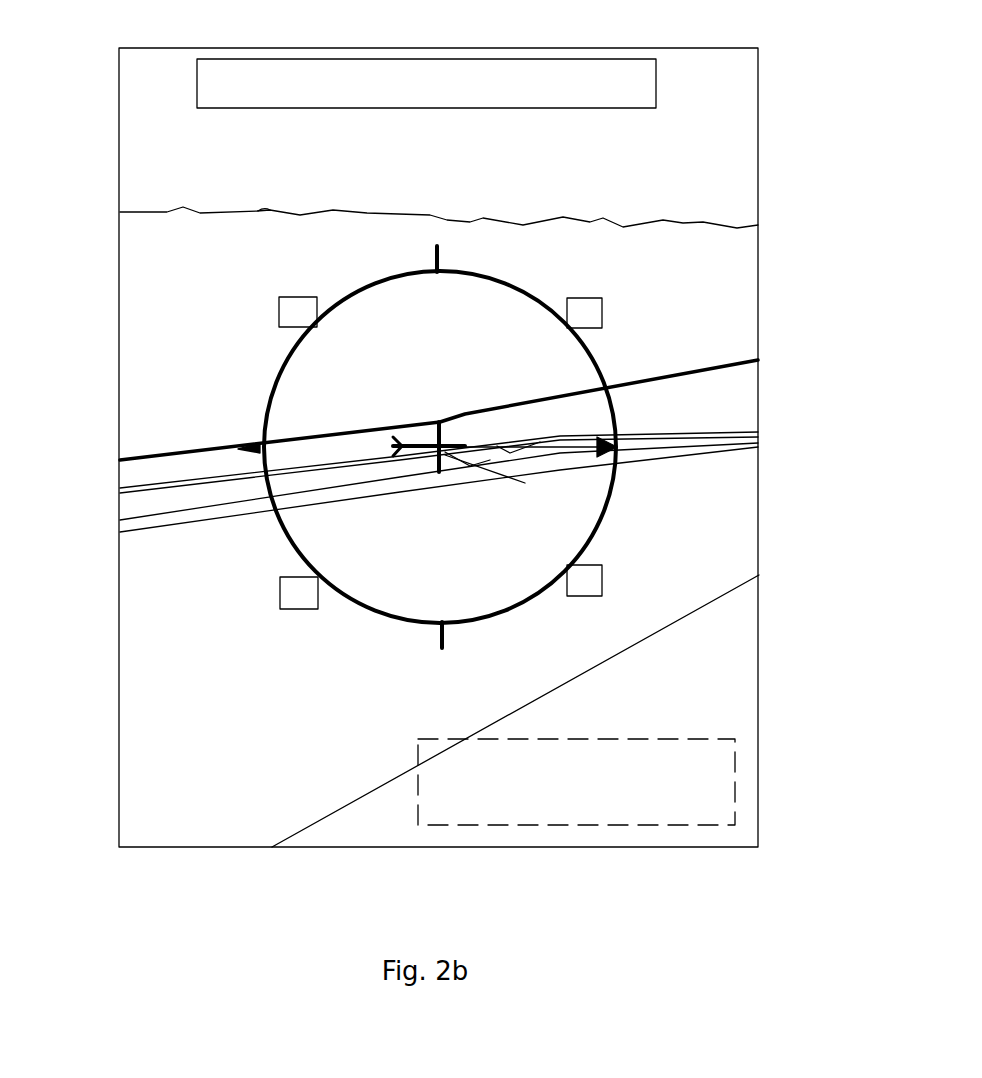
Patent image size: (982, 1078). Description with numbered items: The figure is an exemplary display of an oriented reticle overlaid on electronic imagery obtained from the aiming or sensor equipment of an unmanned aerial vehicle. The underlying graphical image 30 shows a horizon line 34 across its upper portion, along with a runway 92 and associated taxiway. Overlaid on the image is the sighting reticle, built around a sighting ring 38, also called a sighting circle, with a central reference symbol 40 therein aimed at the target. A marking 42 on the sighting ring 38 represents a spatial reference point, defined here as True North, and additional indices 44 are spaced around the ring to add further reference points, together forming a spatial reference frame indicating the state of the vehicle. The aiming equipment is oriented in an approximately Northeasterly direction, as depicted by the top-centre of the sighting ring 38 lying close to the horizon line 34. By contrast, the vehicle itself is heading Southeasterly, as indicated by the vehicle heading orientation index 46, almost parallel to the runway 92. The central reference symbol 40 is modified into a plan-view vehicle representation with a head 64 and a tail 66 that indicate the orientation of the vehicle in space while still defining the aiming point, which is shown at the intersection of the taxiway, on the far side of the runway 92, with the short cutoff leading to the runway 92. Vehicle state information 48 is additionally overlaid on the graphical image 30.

The graphical image 30 is at (760, 105).
The horizon line 34 is at (167, 212).
The sighting ring 38 is at (396, 502).
The central reference symbol 40 is at (626, 483).
The marking 42 is at (68, 327).
The additional indices 44 is at (600, 595).
The vehicle heading orientation index 46 is at (493, 431).
The vehicle state information 48 is at (519, 59).
The head 64 is at (488, 370).
The tail 66 is at (330, 435).
The runway 92 is at (178, 738).